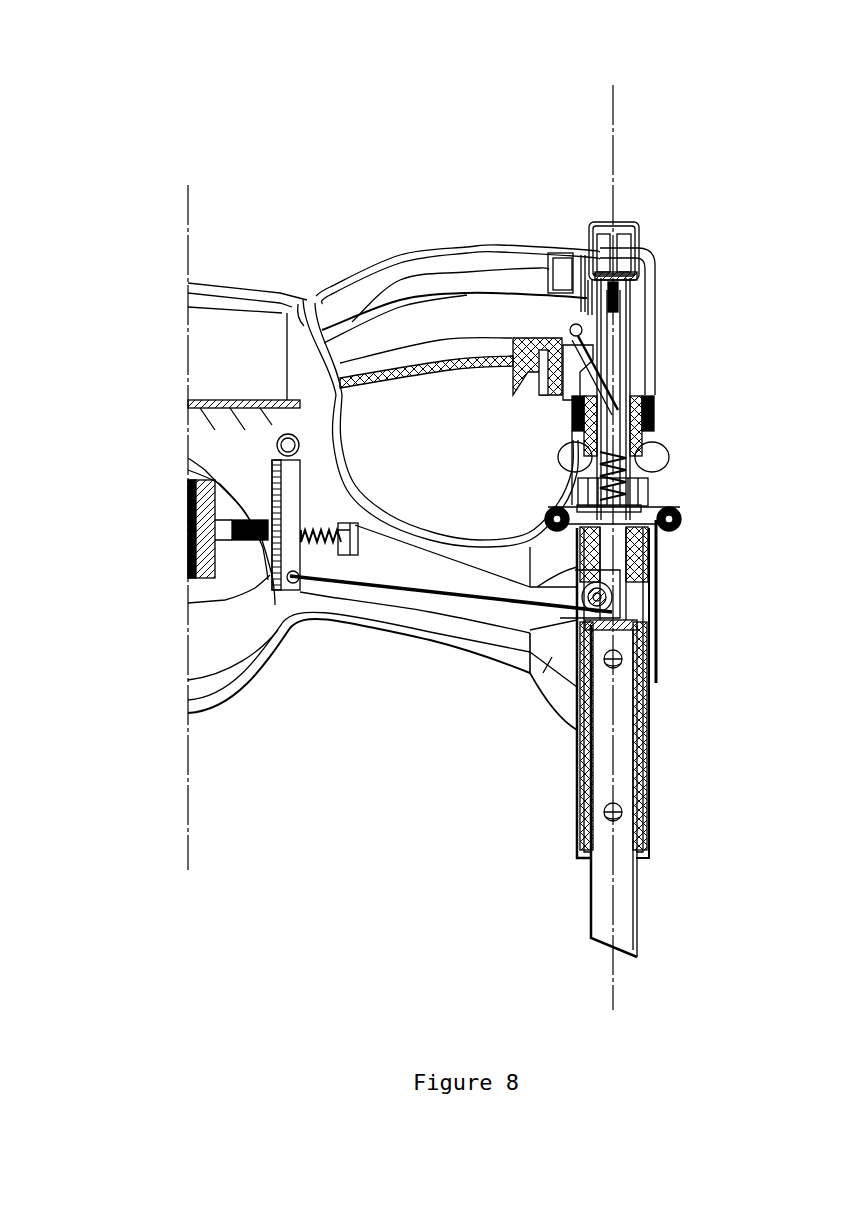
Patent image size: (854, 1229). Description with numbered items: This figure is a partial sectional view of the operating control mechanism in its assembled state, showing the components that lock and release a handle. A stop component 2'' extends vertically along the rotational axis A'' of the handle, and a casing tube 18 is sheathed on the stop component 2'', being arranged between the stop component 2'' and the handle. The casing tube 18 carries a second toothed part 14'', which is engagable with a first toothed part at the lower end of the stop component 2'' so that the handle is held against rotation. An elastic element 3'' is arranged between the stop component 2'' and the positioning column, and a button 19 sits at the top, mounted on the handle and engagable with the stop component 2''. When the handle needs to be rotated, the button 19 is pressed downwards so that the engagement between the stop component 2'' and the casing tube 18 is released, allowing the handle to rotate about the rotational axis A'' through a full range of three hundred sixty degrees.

The button 19 is at (770, 128).
The stop component 2'' is at (678, 369).
The casing tube 18 is at (760, 345).
The second toothed part 14'' is at (663, 431).
The elastic element 3'' is at (652, 509).
The rotational axis A'' is at (685, 519).